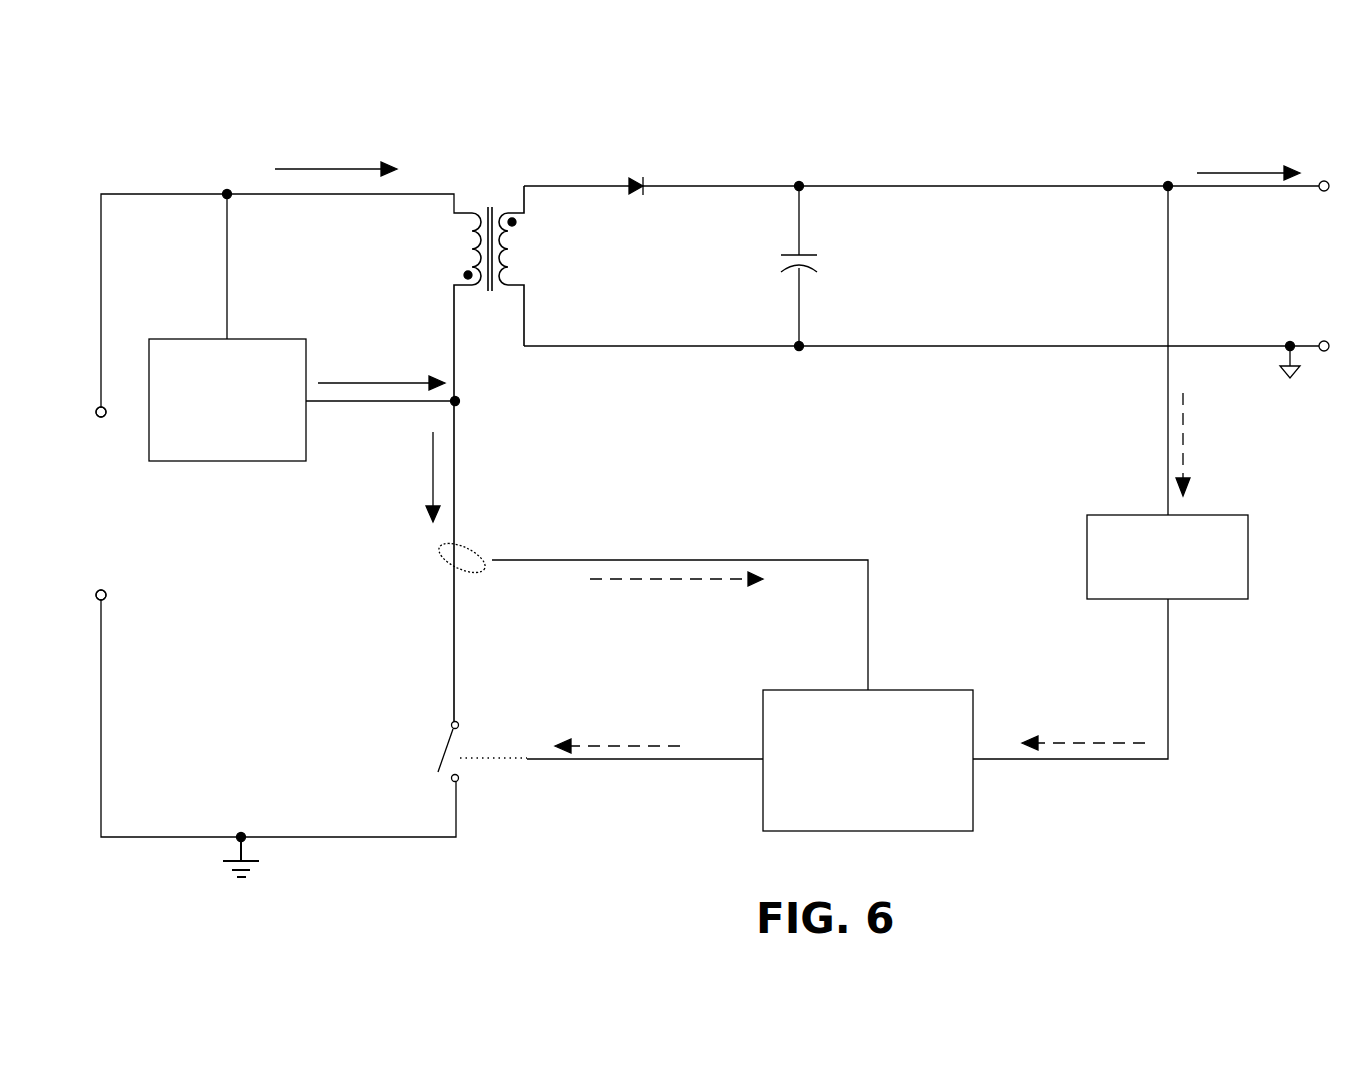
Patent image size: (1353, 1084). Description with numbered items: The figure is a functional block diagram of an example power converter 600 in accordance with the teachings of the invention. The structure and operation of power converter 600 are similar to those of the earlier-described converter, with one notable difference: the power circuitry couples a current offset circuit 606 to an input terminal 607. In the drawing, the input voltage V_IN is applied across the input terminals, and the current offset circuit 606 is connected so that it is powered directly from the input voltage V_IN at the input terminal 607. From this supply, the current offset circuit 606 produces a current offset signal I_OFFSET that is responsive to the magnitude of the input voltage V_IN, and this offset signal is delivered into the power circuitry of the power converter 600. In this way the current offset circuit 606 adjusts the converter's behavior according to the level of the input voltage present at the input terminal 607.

The power converter 600 is at (996, 146).
The current offset circuit 606 is at (289, 331).
The input terminal 607 is at (84, 404).